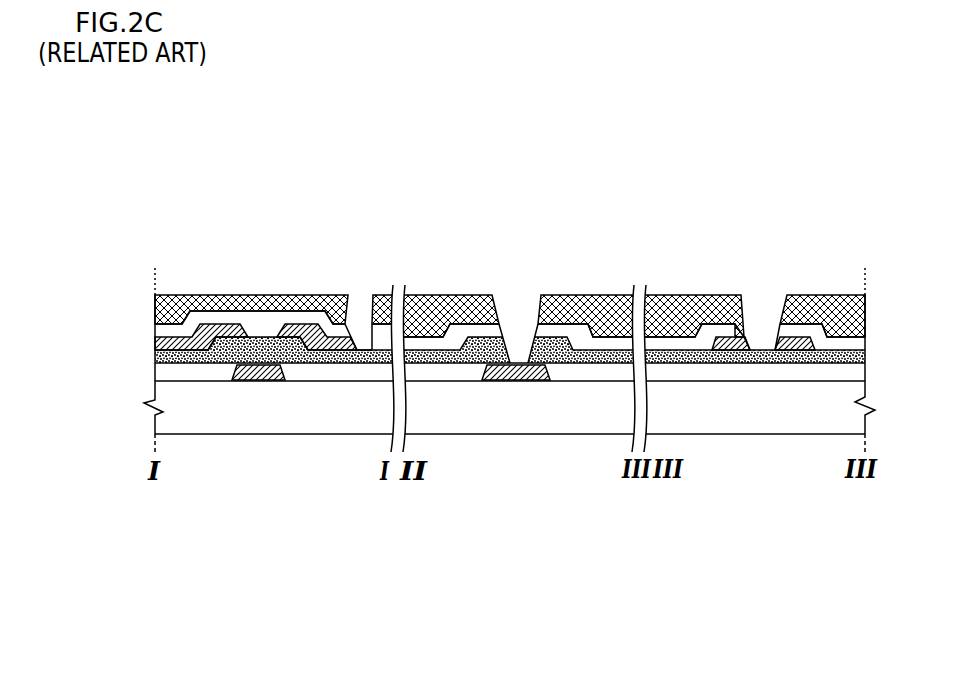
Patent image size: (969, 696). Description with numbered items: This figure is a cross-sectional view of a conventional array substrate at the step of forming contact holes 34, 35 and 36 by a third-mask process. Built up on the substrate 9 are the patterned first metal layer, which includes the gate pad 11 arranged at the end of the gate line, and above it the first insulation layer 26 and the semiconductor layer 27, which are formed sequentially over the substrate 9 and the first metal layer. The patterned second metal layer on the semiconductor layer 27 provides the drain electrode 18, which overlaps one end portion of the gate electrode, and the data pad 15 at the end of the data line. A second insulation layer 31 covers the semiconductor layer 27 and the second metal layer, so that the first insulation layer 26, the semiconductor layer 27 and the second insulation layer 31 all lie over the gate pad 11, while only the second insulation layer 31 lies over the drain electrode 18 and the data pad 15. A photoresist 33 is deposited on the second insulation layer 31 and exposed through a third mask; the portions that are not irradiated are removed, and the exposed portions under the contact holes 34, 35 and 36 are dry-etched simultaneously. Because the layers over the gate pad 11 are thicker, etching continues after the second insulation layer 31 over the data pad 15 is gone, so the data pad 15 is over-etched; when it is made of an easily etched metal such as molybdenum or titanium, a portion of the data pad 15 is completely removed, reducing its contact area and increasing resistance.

The substrate 9 is at (540, 422).
The gate pad 11 is at (550, 373).
The first insulation layer 26 is at (600, 370).
The data pad 15 is at (800, 358).
The semiconductor layer 27 is at (555, 340).
The drain electrode 18 is at (283, 327).
The second insulation layer 31 is at (262, 318).
The photoresist 33 is at (444, 298).
The contact hole 34 is at (357, 307).
The contact hole 35 is at (521, 307).
The contact hole 36 is at (762, 307).